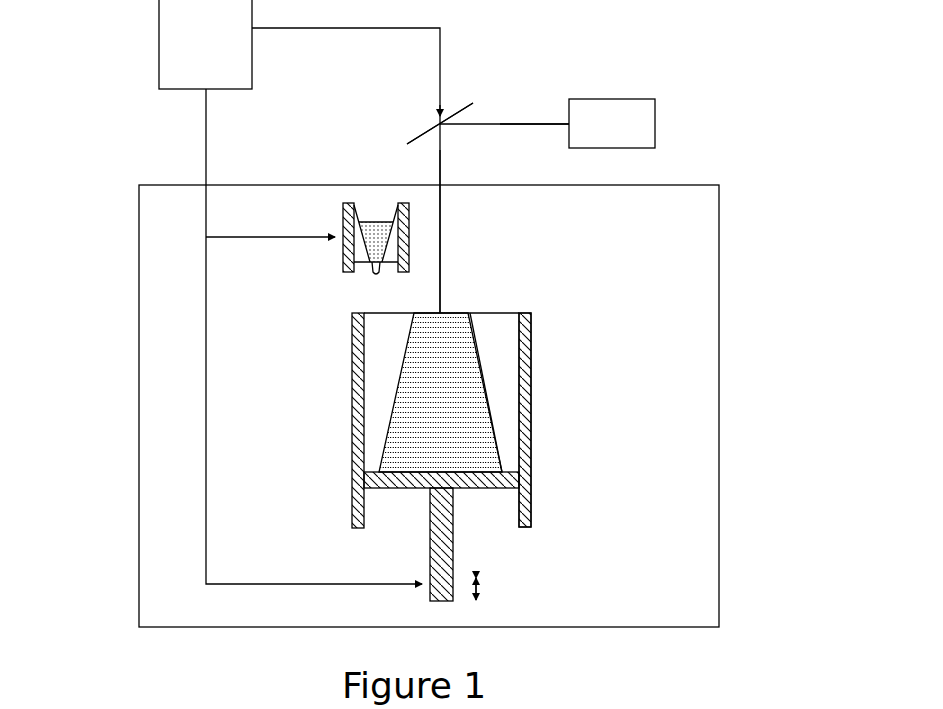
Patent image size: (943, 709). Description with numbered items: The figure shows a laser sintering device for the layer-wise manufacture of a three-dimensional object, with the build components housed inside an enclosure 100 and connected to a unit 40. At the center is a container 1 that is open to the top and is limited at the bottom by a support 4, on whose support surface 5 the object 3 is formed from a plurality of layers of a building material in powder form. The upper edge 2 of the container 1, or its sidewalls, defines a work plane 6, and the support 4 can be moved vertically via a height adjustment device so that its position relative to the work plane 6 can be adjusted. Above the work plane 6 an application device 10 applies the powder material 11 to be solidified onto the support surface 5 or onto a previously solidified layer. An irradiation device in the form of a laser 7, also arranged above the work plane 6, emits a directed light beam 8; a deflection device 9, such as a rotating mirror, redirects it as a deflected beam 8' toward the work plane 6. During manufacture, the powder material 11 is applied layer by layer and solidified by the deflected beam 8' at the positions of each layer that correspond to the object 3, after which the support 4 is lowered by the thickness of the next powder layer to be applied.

The container 1 is at (531, 368).
The upper edge 2 is at (525, 313).
The object 3 is at (504, 412).
The support 4 is at (453, 510).
The support surface 5 is at (512, 470).
The work plane 6 is at (492, 313).
The laser 7 is at (608, 99).
The light beam 8 is at (534, 76).
The deflected beam 8' is at (476, 231).
The deflection device 9 is at (457, 100).
The application device 10 is at (341, 217).
The powder material 11 is at (370, 215).
The power supply 40 is at (159, 28).
The furnace chamber 100 is at (719, 243).